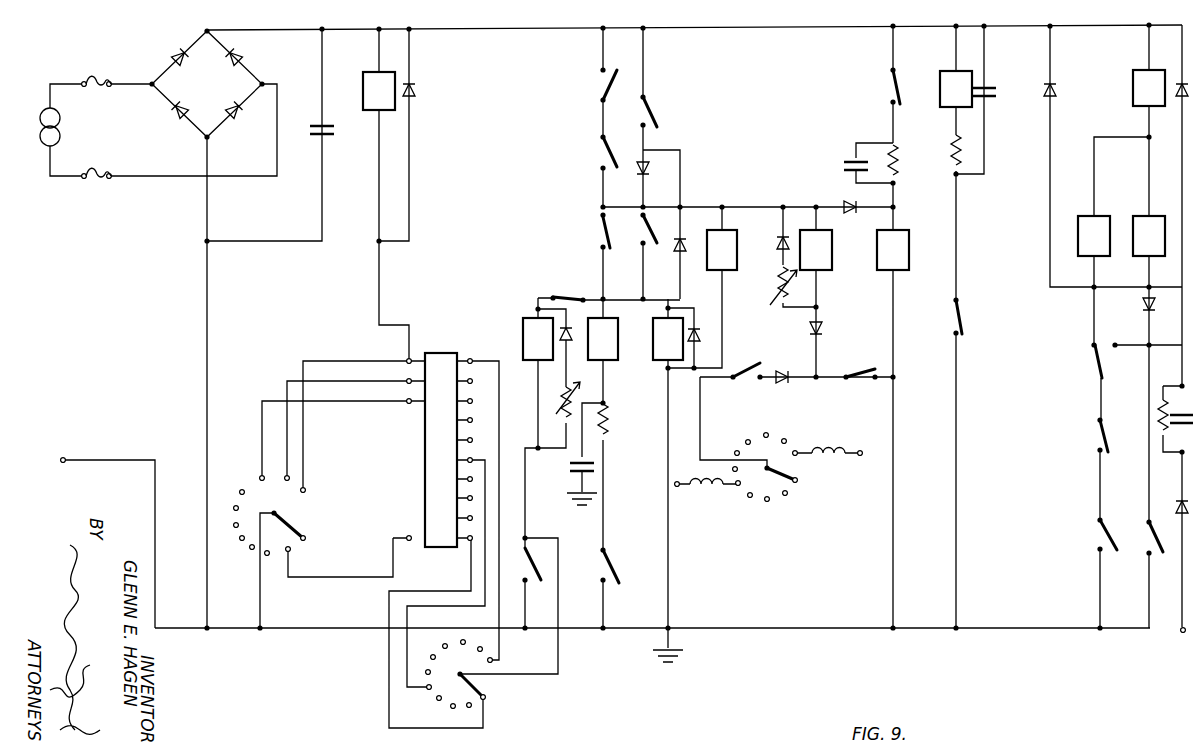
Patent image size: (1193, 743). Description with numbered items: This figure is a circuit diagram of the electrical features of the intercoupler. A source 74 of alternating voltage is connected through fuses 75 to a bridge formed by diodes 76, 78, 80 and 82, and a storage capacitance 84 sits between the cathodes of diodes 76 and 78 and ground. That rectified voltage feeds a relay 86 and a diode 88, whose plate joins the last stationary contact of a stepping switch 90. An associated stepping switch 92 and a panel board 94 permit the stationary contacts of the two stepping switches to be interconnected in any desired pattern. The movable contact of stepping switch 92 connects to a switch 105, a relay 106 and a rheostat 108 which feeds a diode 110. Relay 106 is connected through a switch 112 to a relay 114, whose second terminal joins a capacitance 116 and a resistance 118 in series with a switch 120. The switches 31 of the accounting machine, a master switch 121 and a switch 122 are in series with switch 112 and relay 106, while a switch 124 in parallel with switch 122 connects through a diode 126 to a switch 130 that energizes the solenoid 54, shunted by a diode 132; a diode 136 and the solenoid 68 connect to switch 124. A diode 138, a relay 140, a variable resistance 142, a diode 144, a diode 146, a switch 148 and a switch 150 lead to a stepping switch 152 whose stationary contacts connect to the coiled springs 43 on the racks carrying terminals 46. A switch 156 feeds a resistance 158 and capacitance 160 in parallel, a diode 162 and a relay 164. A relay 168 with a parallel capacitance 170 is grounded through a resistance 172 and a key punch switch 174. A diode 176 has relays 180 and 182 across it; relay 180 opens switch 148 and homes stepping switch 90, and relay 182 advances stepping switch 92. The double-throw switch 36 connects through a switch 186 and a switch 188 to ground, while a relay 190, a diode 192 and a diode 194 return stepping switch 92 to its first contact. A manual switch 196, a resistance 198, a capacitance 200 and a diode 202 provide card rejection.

The switches 31 is at (600, 84).
The single-pole, double-throw switch 36 is at (1104, 352).
The coiled springs 43 is at (832, 446).
The electrical terminal 46 is at (862, 455).
The solenoid 54 is at (734, 240).
The solenoid 68 is at (656, 330).
The source of alternating voltage 74 is at (61, 133).
The fuses 75 is at (102, 82).
The diode 76 is at (174, 54).
The diode 78 is at (238, 51).
The diode 80 is at (240, 115).
The diode 82 is at (178, 115).
The storage capacitance 84 is at (336, 132).
The relay 86 is at (365, 85).
The diode 88 is at (416, 90).
The stepping switch 90 is at (307, 515).
The stepping switch 92 is at (488, 687).
The panel board 94 is at (438, 372).
The single-pole, single-throw switch 105 is at (534, 576).
The relay 106 is at (522, 330).
The rheostat 108 is at (558, 416).
The diode 110 is at (564, 348).
The single-pole, single-throw switch 112 is at (568, 295).
The relay 114 is at (595, 362).
The capacitance 116 is at (568, 466).
The resistance 118 is at (606, 434).
The switch 120 is at (609, 580).
The master switch 121 is at (600, 156).
The single-pole, single-throw switch 122 is at (600, 236).
The switch 124 is at (640, 244).
The diode 126 is at (651, 168).
The single-pole, single-throw switch 130 is at (659, 116).
The diode 132 is at (674, 246).
The diode 136 is at (700, 334).
The diode 138 is at (776, 244).
The relay 140 is at (830, 262).
The variable resistance 142 is at (771, 304).
The diode 144 is at (822, 328).
The diode 146 is at (783, 384).
The switch 148 is at (866, 382).
The switch 150 is at (740, 378).
The stepping switch 152 is at (795, 467).
The single-pole, single-throw switch 156 is at (890, 88).
The resistance 158 is at (897, 150).
The capacitance 160 is at (844, 168).
The diode 162 is at (844, 202).
The relay 164 is at (899, 266).
The relay 168 is at (938, 86).
The capacitance 170 is at (998, 94).
The resistance 172 is at (948, 160).
The switch 174 is at (958, 322).
The diode 176 is at (1056, 90).
The relay 180 is at (1136, 82).
The relay 182 is at (1095, 216).
The switch 186 is at (1098, 440).
The switch 188 is at (1100, 540).
The relay 190 is at (1139, 256).
The diode 192 is at (1178, 94).
The diode 194 is at (1142, 304).
The manually operated single-pole, single-throw switch 196 is at (1142, 550).
The resistance 198 is at (1158, 414).
The capacitance 200 is at (1174, 426).
The diode 202 is at (1176, 510).